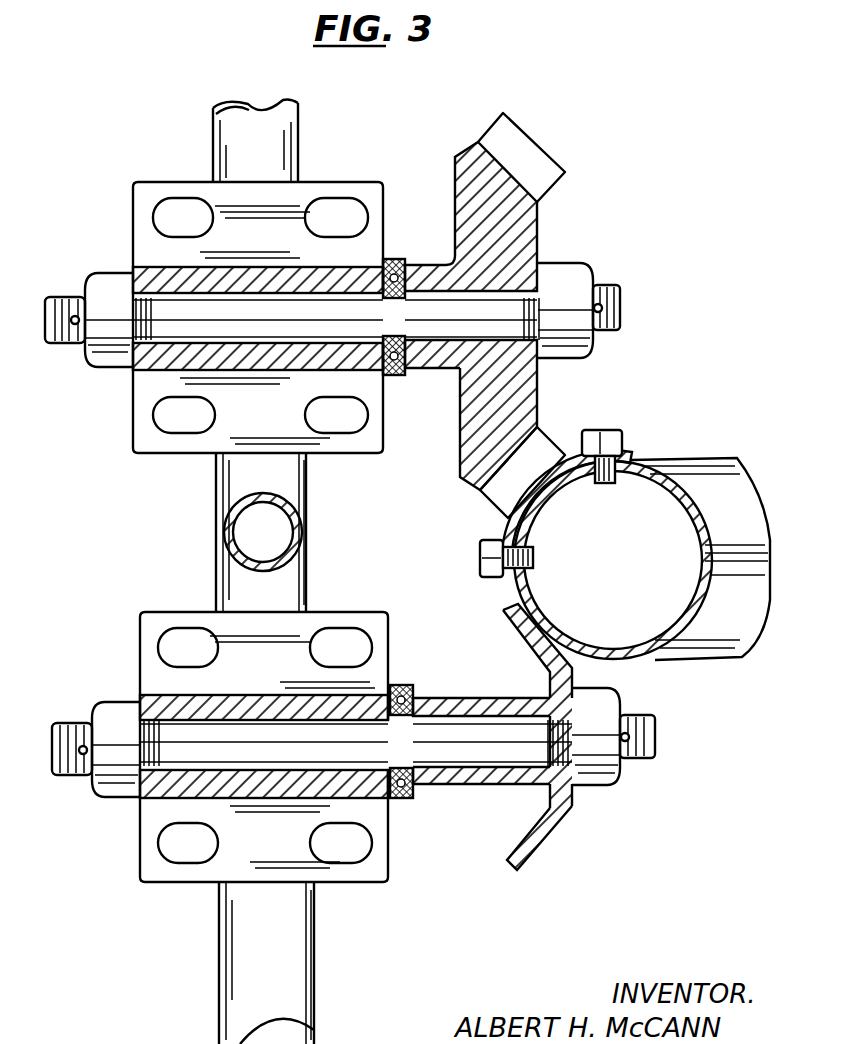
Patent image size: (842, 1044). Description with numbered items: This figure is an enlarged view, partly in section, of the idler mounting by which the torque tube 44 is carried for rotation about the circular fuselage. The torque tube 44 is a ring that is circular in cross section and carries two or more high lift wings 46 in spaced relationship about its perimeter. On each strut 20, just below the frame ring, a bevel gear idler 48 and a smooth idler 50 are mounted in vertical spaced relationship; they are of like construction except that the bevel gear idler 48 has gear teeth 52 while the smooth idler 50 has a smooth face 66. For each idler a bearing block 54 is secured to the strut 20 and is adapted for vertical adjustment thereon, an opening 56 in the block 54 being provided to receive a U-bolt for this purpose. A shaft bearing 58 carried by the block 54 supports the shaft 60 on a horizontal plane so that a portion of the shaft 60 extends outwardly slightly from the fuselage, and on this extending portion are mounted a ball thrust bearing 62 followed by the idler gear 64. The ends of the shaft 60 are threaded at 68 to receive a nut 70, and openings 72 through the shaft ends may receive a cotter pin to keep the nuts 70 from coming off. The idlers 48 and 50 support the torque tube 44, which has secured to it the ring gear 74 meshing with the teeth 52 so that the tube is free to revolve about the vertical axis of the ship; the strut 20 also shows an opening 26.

The strut 20 is at (307, 513).
The hole in pipe post 26 is at (228, 506).
The torque tube 44 is at (688, 487).
The high lift wing 46 is at (710, 457).
The bevel gear idler 48 is at (106, 261).
The smooth idler 50 is at (123, 692).
The gear teeth 52 is at (548, 158).
The bearing block 54 is at (136, 442).
The opening 56 is at (156, 202).
The shaft bearing 58 is at (150, 372).
The shaft 60 is at (250, 280).
The ball thrust bearing 62 is at (394, 258).
The idler gear 64 is at (422, 372).
The smooth face 66 is at (553, 832).
The threaded shaft end 68 is at (48, 322).
The nut 70 is at (85, 280).
The opening 72 is at (75, 333).
The ring gear 74 is at (507, 528).